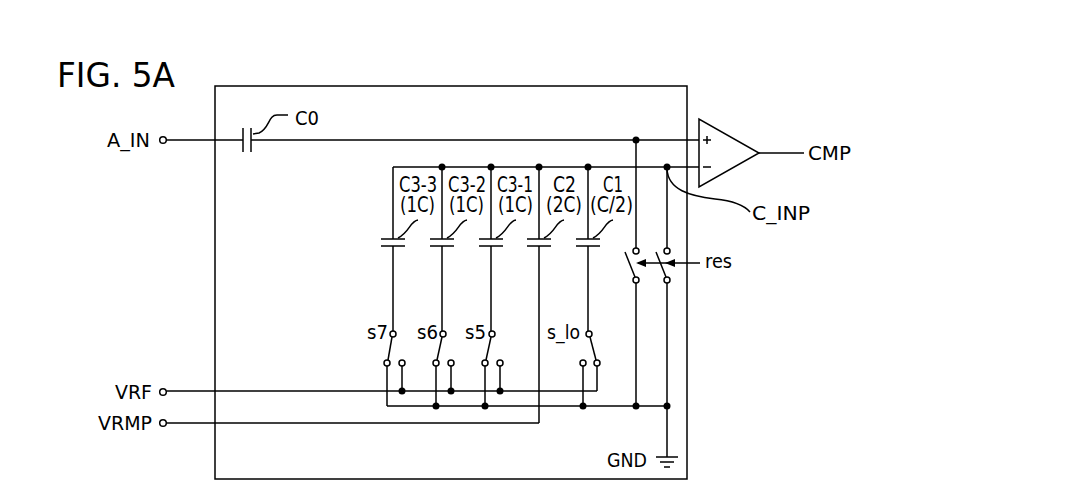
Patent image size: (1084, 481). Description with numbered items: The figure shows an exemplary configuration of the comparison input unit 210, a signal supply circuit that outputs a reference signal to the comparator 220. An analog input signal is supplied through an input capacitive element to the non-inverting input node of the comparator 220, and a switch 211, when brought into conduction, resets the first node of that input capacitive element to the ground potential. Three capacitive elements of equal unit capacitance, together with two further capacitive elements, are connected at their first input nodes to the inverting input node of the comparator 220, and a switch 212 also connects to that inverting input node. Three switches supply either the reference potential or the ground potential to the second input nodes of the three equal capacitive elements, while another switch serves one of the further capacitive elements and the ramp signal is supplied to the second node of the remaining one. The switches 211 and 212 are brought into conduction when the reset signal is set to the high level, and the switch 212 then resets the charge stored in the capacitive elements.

The comparison input unit 210 is at (548, 86).
The switch 211 is at (628, 267).
The switch 212 is at (665, 267).
The comparator 220 is at (730, 135).